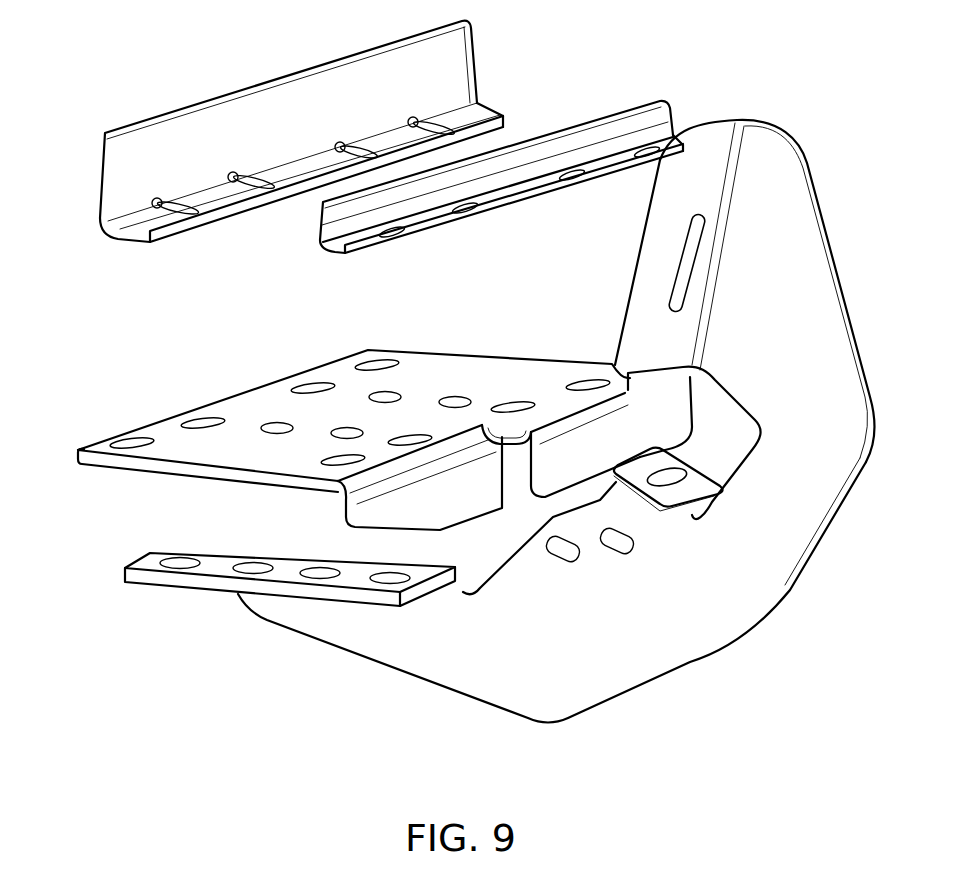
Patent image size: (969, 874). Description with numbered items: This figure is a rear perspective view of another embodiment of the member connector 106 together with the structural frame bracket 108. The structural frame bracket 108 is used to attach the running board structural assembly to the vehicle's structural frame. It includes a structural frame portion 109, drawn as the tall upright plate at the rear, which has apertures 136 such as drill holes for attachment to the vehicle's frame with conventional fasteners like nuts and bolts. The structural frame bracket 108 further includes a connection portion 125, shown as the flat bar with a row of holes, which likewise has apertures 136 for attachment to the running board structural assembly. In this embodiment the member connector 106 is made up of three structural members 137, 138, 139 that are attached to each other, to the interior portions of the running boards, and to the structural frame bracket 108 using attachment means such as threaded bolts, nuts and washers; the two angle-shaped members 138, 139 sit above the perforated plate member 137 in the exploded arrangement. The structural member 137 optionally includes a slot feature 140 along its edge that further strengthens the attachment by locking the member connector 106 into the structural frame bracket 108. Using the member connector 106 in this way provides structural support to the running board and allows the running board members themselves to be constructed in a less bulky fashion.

The member connector 106 is at (323, 243).
The structural frame bracket 108 is at (648, 648).
The structural frame portion 109 is at (805, 268).
The connection portion 125 is at (193, 552).
The apertures 136 is at (703, 220).
The structural member 137 is at (165, 432).
The structural member 138 is at (456, 58).
The structural member 139 is at (656, 113).
The slot feature 140 is at (482, 491).